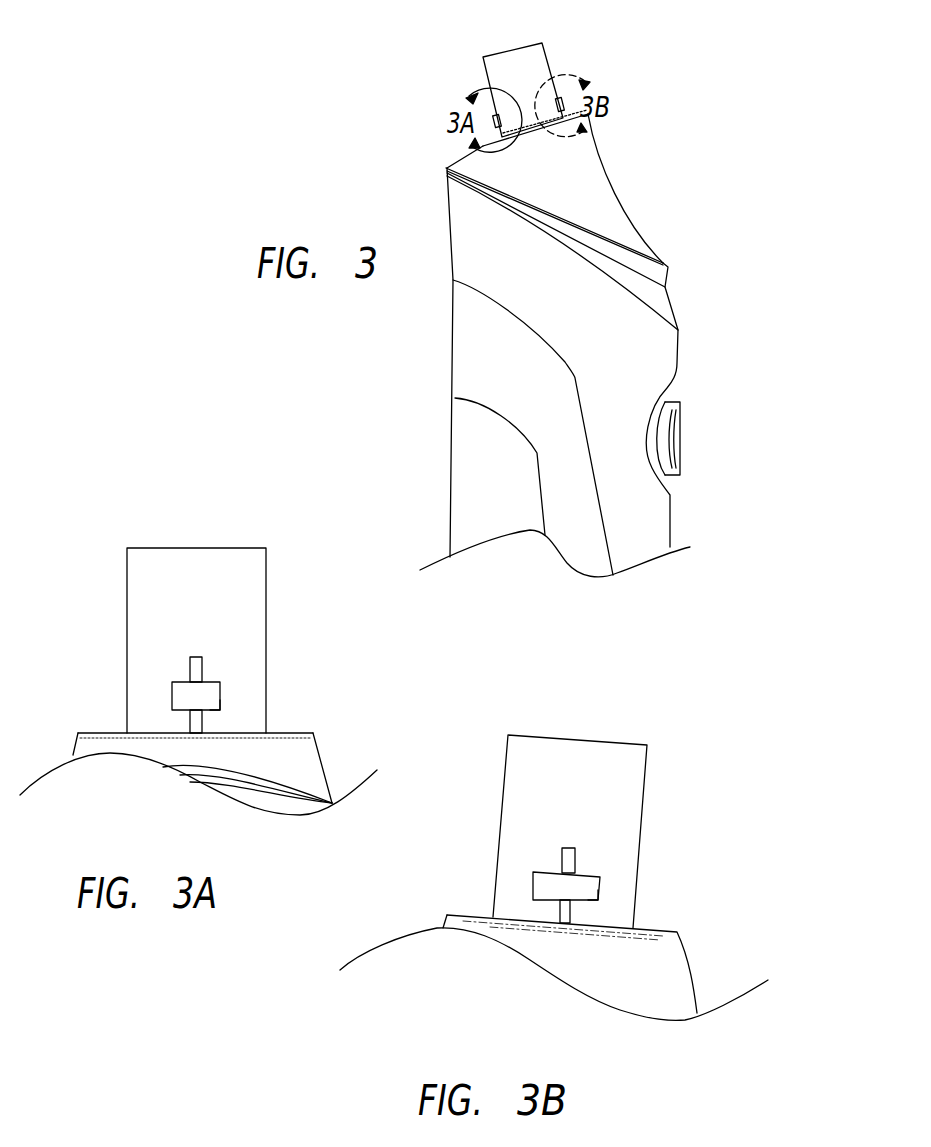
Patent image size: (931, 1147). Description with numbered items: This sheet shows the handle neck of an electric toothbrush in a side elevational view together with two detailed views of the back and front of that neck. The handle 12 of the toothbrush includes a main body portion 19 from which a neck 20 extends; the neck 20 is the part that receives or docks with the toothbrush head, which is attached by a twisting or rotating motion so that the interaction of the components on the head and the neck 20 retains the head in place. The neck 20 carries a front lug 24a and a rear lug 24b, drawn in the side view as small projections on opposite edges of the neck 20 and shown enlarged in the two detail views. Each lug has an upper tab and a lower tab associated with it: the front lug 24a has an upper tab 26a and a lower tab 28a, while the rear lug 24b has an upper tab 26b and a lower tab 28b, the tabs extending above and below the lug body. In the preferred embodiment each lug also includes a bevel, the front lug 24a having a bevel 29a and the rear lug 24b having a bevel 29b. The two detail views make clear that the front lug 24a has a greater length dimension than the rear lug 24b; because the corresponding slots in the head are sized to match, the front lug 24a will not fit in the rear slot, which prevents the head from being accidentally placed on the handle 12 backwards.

In FIG. 3, the handle 12 is at (662, 365).
In FIG. 3A, the handle 12 is at (320, 780).
In FIG. 3B, the handle 12 is at (675, 973).
In FIG. 3, the main body portion 19 is at (613, 213).
In FIG. 3, the neck 20 is at (541, 48).
In FIG. 3A, the neck 20 is at (200, 556).
In FIG. 3B, the neck 20 is at (583, 748).
In FIG. 3, the front lug 24a is at (564, 99).
In FIG. 3B, the front lug 24a is at (590, 888).
In FIG. 3, the rear lug 24b is at (494, 126).
In FIG. 3A, the rear lug 24b is at (210, 693).
In FIG. 3B, the upper tab 26a is at (575, 855).
In FIG. 3A, the upper tab 26b is at (203, 662).
In FIG. 3B, the lower tab 28a is at (560, 913).
In FIG. 3A, the lower tab 28b is at (193, 720).
In FIG. 3B, the bevel 29a is at (593, 897).
In FIG. 3A, the bevel 29b is at (214, 706).